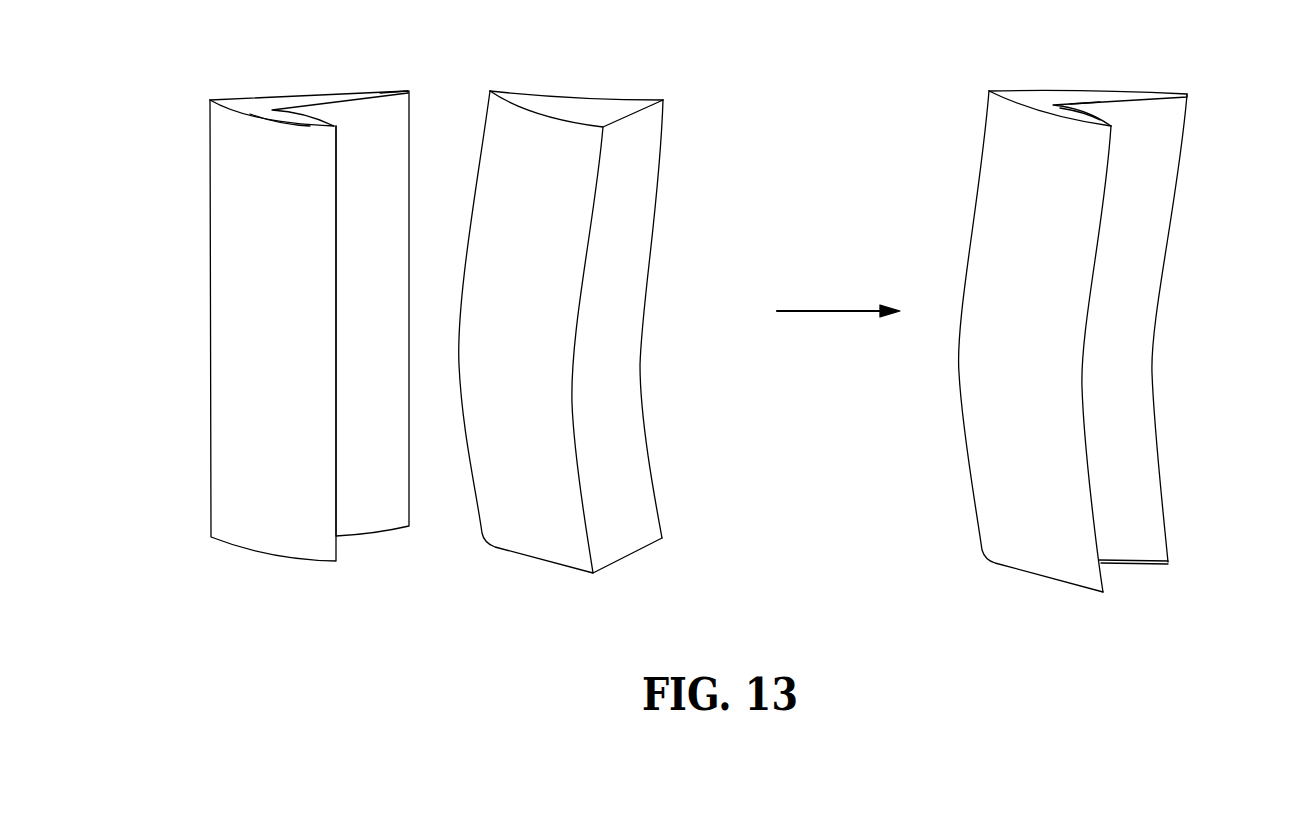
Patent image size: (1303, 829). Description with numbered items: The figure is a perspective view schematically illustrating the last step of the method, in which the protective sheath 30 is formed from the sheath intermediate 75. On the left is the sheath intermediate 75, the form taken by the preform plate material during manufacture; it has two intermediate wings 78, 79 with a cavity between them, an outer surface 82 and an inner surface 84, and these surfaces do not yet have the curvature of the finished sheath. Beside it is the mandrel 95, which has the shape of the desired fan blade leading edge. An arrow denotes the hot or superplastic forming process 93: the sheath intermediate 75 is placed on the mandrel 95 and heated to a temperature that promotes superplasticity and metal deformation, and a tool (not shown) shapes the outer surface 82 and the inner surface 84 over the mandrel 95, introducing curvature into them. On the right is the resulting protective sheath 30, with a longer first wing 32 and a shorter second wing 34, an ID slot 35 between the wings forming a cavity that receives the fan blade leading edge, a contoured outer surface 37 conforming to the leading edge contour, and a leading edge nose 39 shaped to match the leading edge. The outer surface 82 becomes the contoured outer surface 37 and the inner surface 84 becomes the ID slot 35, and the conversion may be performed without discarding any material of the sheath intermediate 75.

The sheath intermediate 75 is at (319, 296).
The intermediate wing 78 is at (380, 92).
The intermediate wing 79 is at (277, 124).
The outer surface 82 is at (250, 268).
The inner surface 84 is at (387, 253).
The mandrel 95 is at (572, 110).
The hot or superplastic forming process 93 is at (859, 313).
The protective sheath 30 is at (1111, 314).
The contoured outer surface 37 is at (1003, 323).
The first wing 32 is at (1148, 93).
The second wing 34 is at (1077, 117).
The ID slot 35 is at (1097, 108).
The leading edge nose 39 is at (1025, 100).